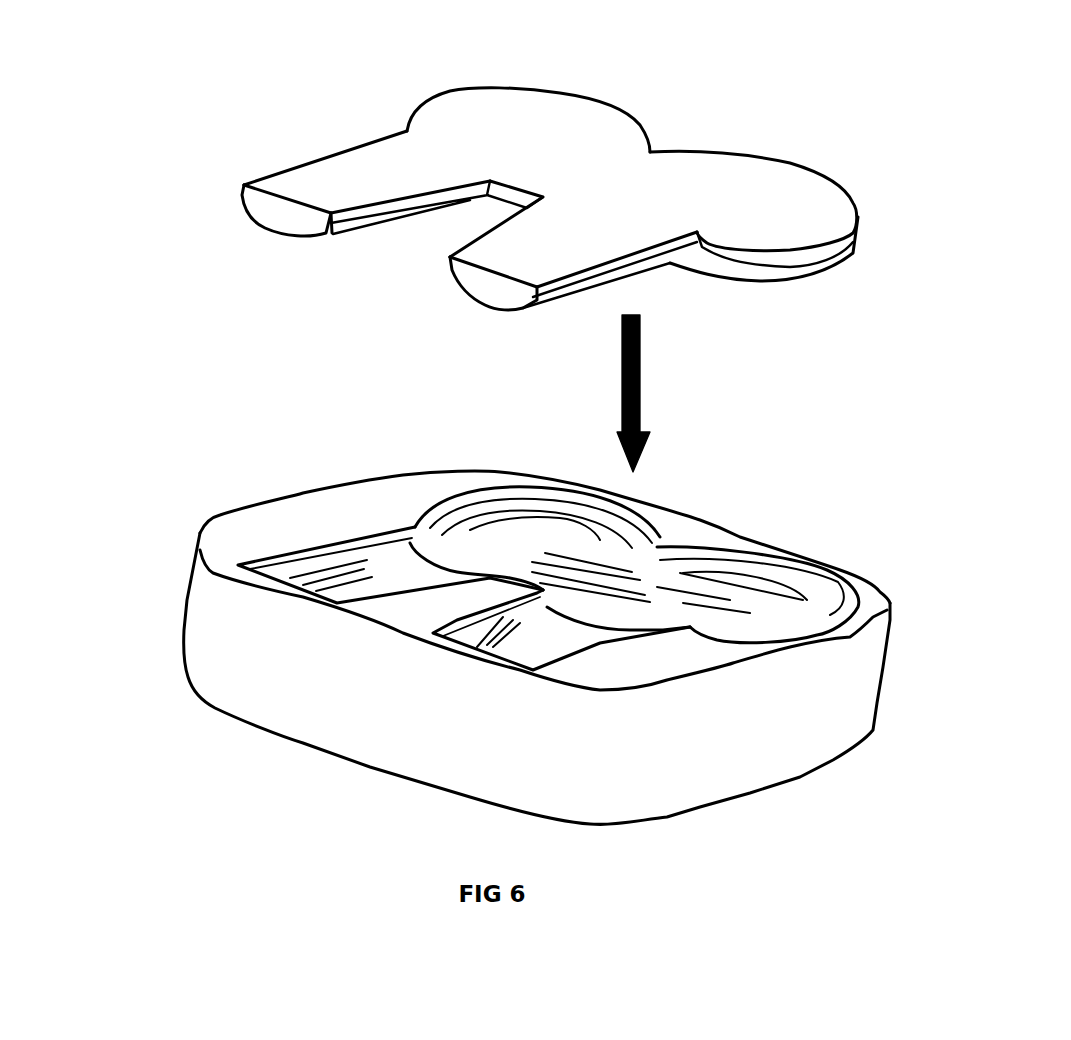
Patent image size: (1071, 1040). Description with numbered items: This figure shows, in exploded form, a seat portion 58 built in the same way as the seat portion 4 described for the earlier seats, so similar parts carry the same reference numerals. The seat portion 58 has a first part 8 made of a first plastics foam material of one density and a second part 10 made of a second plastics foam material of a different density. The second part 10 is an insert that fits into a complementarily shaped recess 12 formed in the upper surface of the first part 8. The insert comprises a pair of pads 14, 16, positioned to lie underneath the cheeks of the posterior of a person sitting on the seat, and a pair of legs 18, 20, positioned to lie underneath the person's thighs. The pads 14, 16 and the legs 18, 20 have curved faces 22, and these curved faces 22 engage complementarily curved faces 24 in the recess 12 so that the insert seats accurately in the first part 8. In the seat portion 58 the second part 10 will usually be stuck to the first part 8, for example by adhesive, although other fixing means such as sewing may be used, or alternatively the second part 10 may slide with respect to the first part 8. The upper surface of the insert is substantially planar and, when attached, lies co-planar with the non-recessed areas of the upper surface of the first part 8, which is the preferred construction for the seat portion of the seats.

The seat portion 58 is at (146, 236).
The second part 10 is at (348, 136).
The leg 20 is at (310, 178).
The pad 16 is at (560, 142).
The pad 14 is at (757, 192).
The leg 18 is at (525, 256).
The curved faces 22 is at (338, 236).
The seat portion 4 is at (176, 606).
The first part 8 is at (307, 503).
The recess 12 is at (718, 581).
The curved faces 24 is at (371, 588).